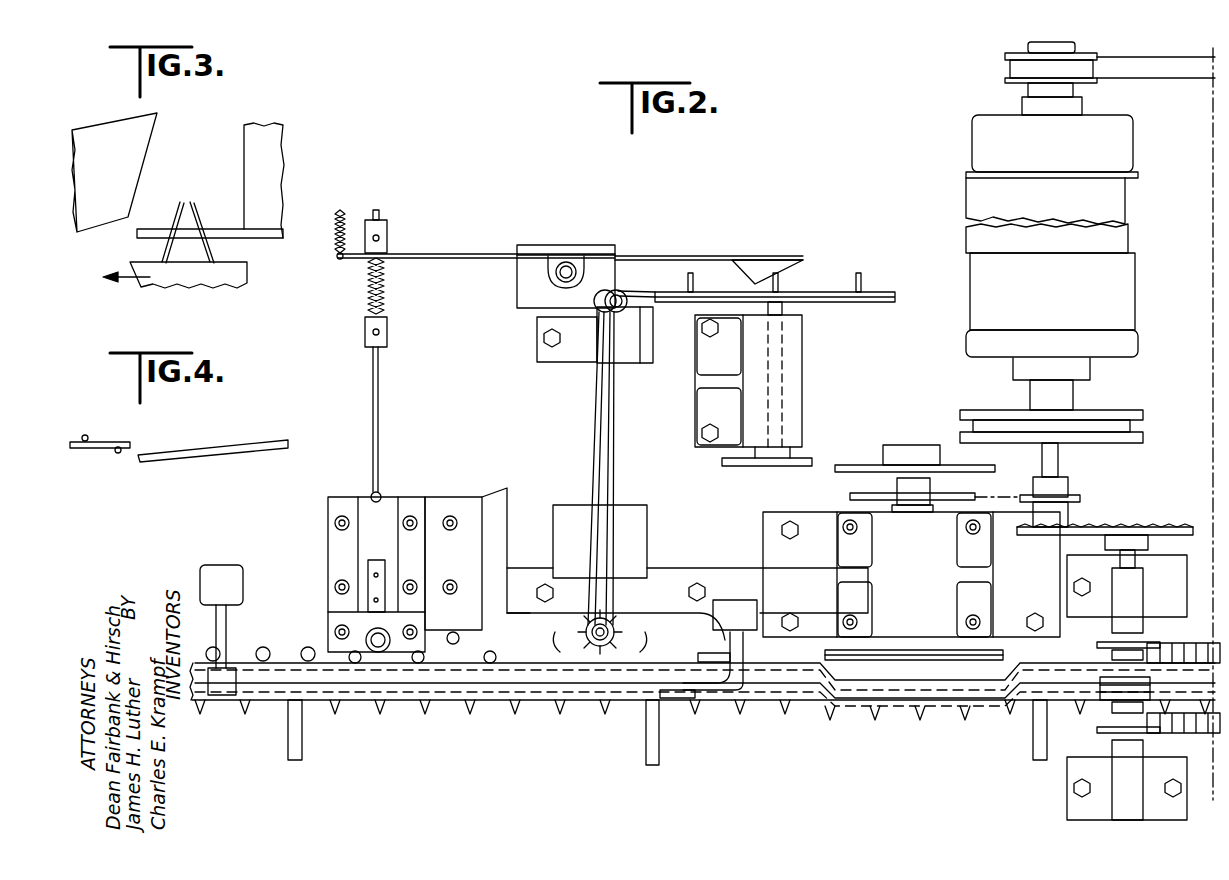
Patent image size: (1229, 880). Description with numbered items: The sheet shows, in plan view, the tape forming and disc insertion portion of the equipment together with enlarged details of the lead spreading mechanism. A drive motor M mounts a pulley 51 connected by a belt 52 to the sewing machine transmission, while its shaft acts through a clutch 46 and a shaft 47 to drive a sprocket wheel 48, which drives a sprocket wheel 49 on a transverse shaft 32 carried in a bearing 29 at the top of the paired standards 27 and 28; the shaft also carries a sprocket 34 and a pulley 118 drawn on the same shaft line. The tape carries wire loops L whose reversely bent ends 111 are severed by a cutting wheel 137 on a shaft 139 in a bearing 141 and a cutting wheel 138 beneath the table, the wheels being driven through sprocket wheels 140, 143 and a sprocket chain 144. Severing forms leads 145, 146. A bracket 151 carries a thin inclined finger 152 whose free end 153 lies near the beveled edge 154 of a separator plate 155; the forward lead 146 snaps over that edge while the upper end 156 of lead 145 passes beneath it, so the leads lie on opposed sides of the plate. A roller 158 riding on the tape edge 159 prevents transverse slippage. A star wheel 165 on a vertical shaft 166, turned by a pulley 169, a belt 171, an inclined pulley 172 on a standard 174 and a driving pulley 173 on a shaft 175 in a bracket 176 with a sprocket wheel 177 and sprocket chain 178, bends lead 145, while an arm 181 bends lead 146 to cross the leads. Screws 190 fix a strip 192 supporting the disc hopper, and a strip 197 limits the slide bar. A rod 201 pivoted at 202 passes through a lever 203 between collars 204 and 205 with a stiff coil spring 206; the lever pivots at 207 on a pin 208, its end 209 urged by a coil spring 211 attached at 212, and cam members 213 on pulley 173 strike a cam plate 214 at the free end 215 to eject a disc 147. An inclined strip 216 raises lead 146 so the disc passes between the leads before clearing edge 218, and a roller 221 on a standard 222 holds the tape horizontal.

In FIG. 2, the standard 27 is at (1165, 617).
In FIG. 2, the standard 28 is at (1067, 762).
In FIG. 2, the bearing 29 is at (1130, 580).
In FIG. 2, the transverse shaft 32 is at (1125, 668).
In FIG. 2, the sprocket 34 is at (1097, 645).
In FIG. 2, the clutch 46 is at (988, 410).
In FIG. 2, the shaft 47 is at (1058, 460).
In FIG. 2, the sprocket wheel 48 is at (1050, 530).
In FIG. 2, the sprocket wheel 49 is at (1176, 527).
In FIG. 2, the pulley 51 is at (1005, 75).
In FIG. 2, the belt 52 is at (1182, 80).
In FIG. 2, the reversely bent end 111 is at (1003, 660).
In FIG. 2, the pulley 118 is at (1150, 687).
In FIG. 2, the cutting wheel 137 is at (890, 651).
In FIG. 2, the cutting wheel 138 is at (926, 660).
In FIG. 2, the shaft 139 is at (895, 487).
In FIG. 2, the sprocket wheel 140 is at (1070, 500).
In FIG. 2, the bearing 141 is at (935, 604).
In FIG. 2, the sprocket wheel 143 is at (955, 465).
In FIG. 2, the sprocket chain 144 is at (1000, 490).
In FIG. 3, the lead 145 is at (194, 217).
In FIG. 4, the lead 145 is at (116, 453).
In FIG. 2, the lead 145 is at (848, 686).
In FIG. 3, the lead 146 is at (176, 215).
In FIG. 4, the lead 146 is at (90, 438).
In FIG. 2, the lead 146 is at (822, 662).
In FIG. 2, the capacitor wafer 147 is at (265, 647).
In FIG. 3, the bracket 151 is at (255, 148).
In FIG. 4, the bracket 151 is at (263, 448).
In FIG. 2, the bracket 151 is at (762, 640).
In FIG. 3, the finger 152 is at (222, 235).
In FIG. 4, the finger 152 is at (203, 453).
In FIG. 2, the finger 152 is at (735, 615).
In FIG. 3, the free end 153 is at (140, 234).
In FIG. 4, the free end 153 is at (138, 458).
In FIG. 3, the edge 154 is at (128, 210).
In FIG. 4, the edge 154 is at (135, 444).
In FIG. 3, the separator plate 155 is at (95, 138).
In FIG. 4, the separator plate 155 is at (82, 437).
In FIG. 2, the separator plate 155 is at (677, 640).
In FIG. 3, the upper end 156 is at (192, 202).
In FIG. 2, the roller 158 is at (686, 700).
In FIG. 2, the edge 159 is at (632, 700).
In FIG. 2, the star wheel 165 is at (583, 645).
In FIG. 2, the vertical shaft 166 is at (600, 647).
In FIG. 2, the pulley 169 is at (613, 622).
In FIG. 2, the belt 171 is at (598, 440).
In FIG. 2, the inclined pulley 172 is at (622, 294).
In FIG. 2, the driving pulley 173 is at (828, 290).
In FIG. 2, the standard 174 is at (572, 345).
In FIG. 2, the shaft 175 is at (786, 308).
In FIG. 2, the bracket 176 is at (804, 362).
In FIG. 2, the sprocket wheel 177 is at (768, 466).
In FIG. 2, the sprocket chain 178 is at (830, 464).
In FIG. 2, the arm 181 is at (440, 645).
In FIG. 2, the screw 190 is at (412, 625).
In FIG. 2, the strip 192 is at (358, 618).
In FIG. 2, the strip 197 is at (376, 560).
In FIG. 2, the rod 201 is at (380, 390).
In FIG. 2, the pivotal connection 202 is at (380, 492).
In FIG. 2, the lever 203 is at (444, 254).
In FIG. 2, the collar 204 is at (388, 228).
In FIG. 2, the collar 205 is at (388, 330).
In FIG. 2, the coil spring 206 is at (388, 290).
In FIG. 2, the pivot 207 is at (565, 262).
In FIG. 2, the pin 208 is at (575, 265).
In FIG. 2, the end 209 is at (356, 262).
In FIG. 2, the coil spring 211 is at (340, 210).
In FIG. 2, the spring attachment point 212 is at (337, 257).
In FIG. 2, the cam member 213 is at (863, 279).
In FIG. 2, the cam plate 214 is at (750, 262).
In FIG. 2, the free end 215 is at (788, 258).
In FIG. 2, the inclined strip 216 is at (398, 658).
In FIG. 2, the edge 218 is at (372, 655).
In FIG. 2, the roller 221 is at (220, 692).
In FIG. 2, the standard 222 is at (243, 575).
In FIG. 2, the drive motor M is at (960, 144).
In FIG. 2, the loop L is at (968, 712).